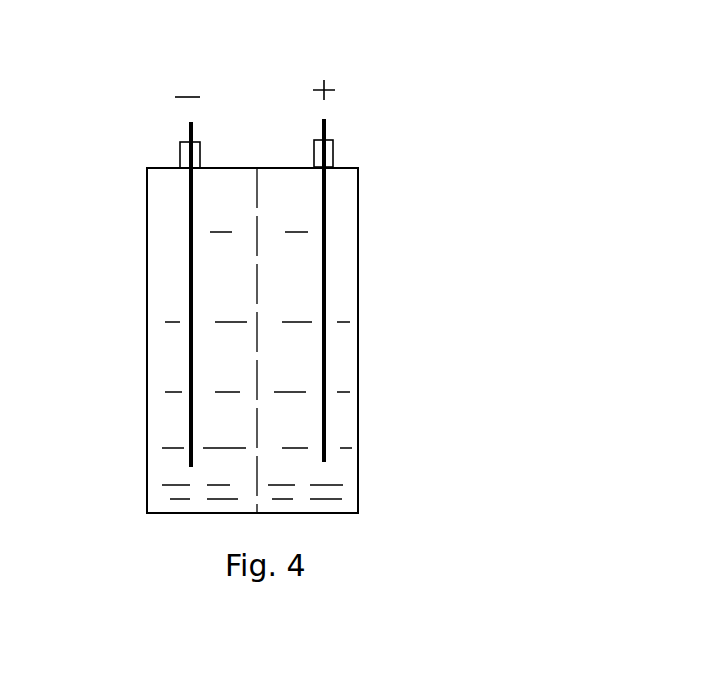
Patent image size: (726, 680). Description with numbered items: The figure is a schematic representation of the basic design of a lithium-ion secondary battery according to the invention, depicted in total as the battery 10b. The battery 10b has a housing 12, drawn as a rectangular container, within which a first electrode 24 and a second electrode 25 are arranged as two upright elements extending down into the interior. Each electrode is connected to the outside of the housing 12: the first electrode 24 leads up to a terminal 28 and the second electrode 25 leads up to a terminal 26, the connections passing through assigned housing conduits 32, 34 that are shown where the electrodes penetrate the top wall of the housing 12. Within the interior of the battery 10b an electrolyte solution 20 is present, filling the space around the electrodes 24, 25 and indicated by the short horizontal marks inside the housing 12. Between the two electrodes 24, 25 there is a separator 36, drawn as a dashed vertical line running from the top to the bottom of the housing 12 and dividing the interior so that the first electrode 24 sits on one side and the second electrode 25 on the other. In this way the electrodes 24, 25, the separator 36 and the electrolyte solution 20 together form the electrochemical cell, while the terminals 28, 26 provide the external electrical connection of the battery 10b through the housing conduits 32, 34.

The secondary battery 10b is at (438, 158).
The housing 12 is at (358, 322).
The electrolyte solution 20 is at (348, 256).
The first electrode 24 is at (187, 212).
The second electrode 25 is at (325, 205).
The terminal 26 is at (317, 134).
The terminal 28 is at (192, 134).
The housing conduit 32 is at (180, 157).
The housing conduit 34 is at (340, 137).
The separator 36 is at (257, 415).